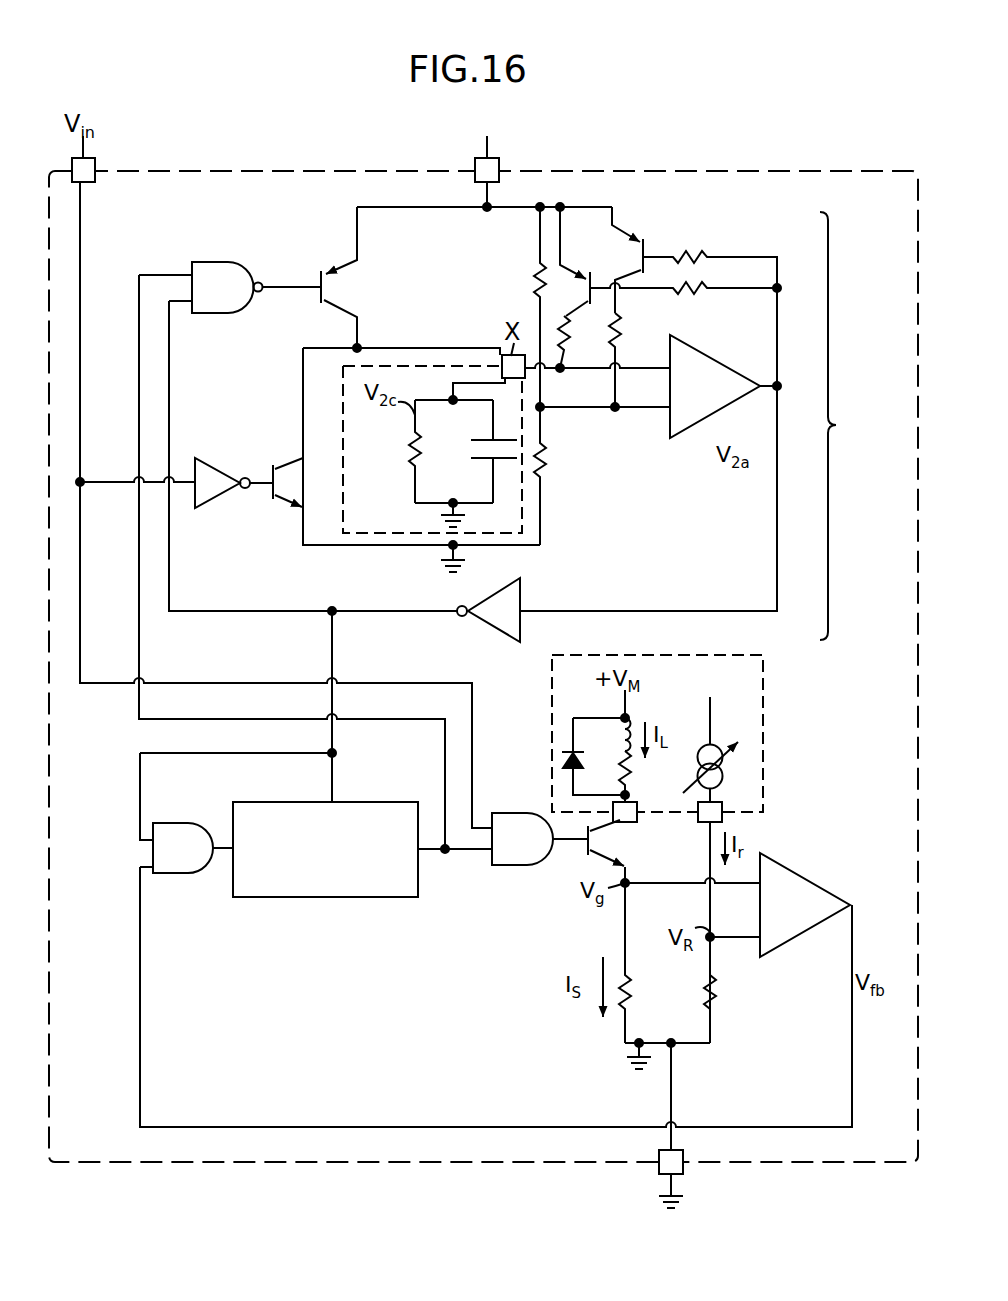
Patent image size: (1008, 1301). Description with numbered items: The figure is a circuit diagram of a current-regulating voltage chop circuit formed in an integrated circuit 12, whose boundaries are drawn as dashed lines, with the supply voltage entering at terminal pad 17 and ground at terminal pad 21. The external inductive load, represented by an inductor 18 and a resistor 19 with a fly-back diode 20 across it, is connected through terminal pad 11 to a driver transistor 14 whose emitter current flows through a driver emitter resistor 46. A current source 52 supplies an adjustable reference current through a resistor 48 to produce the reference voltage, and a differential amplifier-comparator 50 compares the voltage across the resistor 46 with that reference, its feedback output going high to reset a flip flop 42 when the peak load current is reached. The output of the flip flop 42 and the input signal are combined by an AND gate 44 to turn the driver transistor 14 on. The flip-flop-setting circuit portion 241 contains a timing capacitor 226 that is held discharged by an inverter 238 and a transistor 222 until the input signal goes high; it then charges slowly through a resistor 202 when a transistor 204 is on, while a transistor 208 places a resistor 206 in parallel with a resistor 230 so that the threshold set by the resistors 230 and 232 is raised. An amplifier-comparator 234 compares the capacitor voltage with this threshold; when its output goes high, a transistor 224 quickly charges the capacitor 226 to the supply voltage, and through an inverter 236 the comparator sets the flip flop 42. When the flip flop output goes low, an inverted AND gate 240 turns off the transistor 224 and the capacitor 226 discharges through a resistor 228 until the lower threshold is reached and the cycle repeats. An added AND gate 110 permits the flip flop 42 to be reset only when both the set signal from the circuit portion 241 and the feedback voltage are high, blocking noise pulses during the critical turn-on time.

The integrated circuit 12 is at (483, 666).
The terminal pad 17 is at (500, 166).
The inverted AND gate 240 is at (238, 300).
The transistor 224 is at (324, 287).
The resistor 230 is at (538, 278).
The resistor 232 is at (548, 457).
The resistor 228 is at (410, 460).
The capacitor 226 is at (466, 452).
The transistor 204 is at (592, 270).
The resistor 202 is at (568, 350).
The transistor 208 is at (648, 242).
The resistor 206 is at (622, 318).
The amplifier-comparator 234 is at (718, 405).
The flip-flop-setting circuit portion 241 is at (853, 426).
The inverter 236 is at (486, 616).
The inverter 238 is at (213, 492).
The transistor 222 is at (276, 483).
The inductor 18 is at (621, 744).
The resistor 19 is at (622, 782).
The fly-back diode 20 is at (560, 765).
The current source 52 is at (722, 772).
The terminal pad 11 is at (636, 823).
The driver transistor 14 is at (586, 846).
The AND gate 44 is at (532, 855).
The driver emitter resistor 46 is at (631, 986).
The resistor 48 is at (718, 986).
The differential amplifier-comparator 50 is at (810, 920).
The terminal pad 21 is at (680, 1160).
The flip flop 42 is at (346, 890).
The AND gate 110 is at (190, 867).